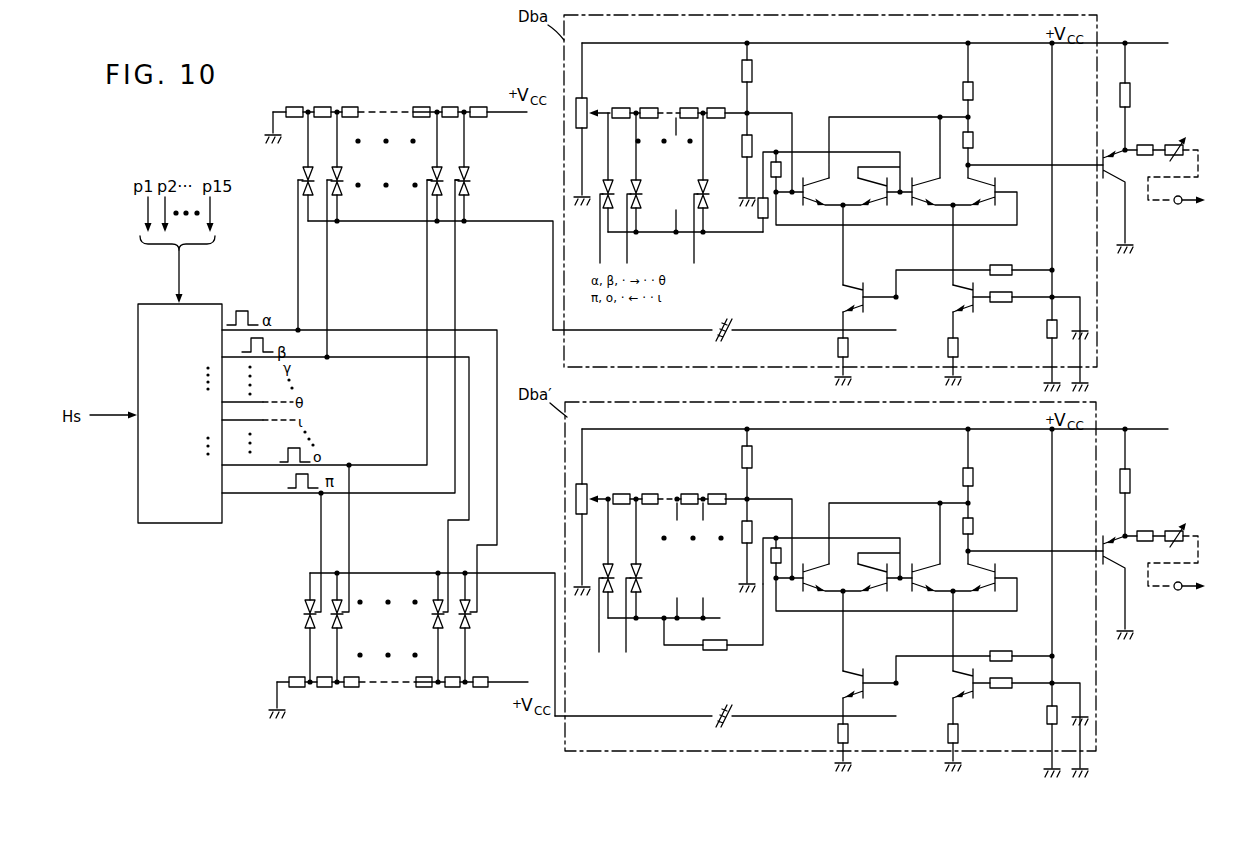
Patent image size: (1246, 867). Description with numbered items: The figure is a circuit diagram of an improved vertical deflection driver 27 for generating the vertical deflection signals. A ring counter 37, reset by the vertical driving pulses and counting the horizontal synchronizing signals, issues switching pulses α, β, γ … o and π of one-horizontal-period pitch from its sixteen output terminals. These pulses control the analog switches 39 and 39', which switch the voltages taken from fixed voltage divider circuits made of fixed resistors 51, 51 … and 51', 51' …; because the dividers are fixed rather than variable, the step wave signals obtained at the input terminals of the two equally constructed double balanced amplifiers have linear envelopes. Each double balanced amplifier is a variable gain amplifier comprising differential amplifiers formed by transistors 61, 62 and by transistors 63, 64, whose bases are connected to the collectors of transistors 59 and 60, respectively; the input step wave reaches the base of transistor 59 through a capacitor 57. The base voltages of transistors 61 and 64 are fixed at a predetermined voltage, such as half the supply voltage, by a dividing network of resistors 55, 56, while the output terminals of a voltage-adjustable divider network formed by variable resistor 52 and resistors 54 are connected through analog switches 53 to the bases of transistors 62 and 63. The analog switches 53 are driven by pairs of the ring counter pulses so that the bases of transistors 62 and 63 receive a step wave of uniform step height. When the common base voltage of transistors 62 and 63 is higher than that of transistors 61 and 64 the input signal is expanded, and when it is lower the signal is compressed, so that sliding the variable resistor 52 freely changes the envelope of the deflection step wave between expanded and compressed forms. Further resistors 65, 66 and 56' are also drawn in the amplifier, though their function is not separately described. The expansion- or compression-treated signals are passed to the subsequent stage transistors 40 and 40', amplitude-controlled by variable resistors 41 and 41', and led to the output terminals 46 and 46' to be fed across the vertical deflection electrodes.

The vertical deflection driver 27 is at (276, 80).
The ring-counter 37 is at (180, 523).
The analog switches 39 is at (388, 166).
The analog switches 39' is at (388, 627).
The fixed resistors 51 is at (400, 97).
The fixed resistors 51' is at (402, 698).
The variable resistor 52 is at (588, 107).
The analog switches 53 is at (647, 172).
The resistors 54 is at (624, 107).
The resistor of dividing network 55 is at (752, 72).
The resistor of dividing network 56 is at (761, 139).
The resistor 56' is at (747, 214).
The capacitor 57 is at (724, 342).
The transistor 59 is at (852, 289).
The transistor 60 is at (962, 289).
The transistor 61 is at (817, 181).
The transistor 62 is at (870, 184).
The transistor 63 is at (924, 183).
The transistor 64 is at (984, 180).
The resistor 65 is at (973, 144).
The resistor 66 is at (973, 94).
The emitter follower 40 is at (1116, 148).
The variable resistor 41 is at (1173, 137).
The output terminal 46 is at (1176, 196).
The subsequent stage transistor 40' is at (1116, 534).
The variable resistor 41' is at (1172, 522).
The output terminal 46' is at (1176, 581).